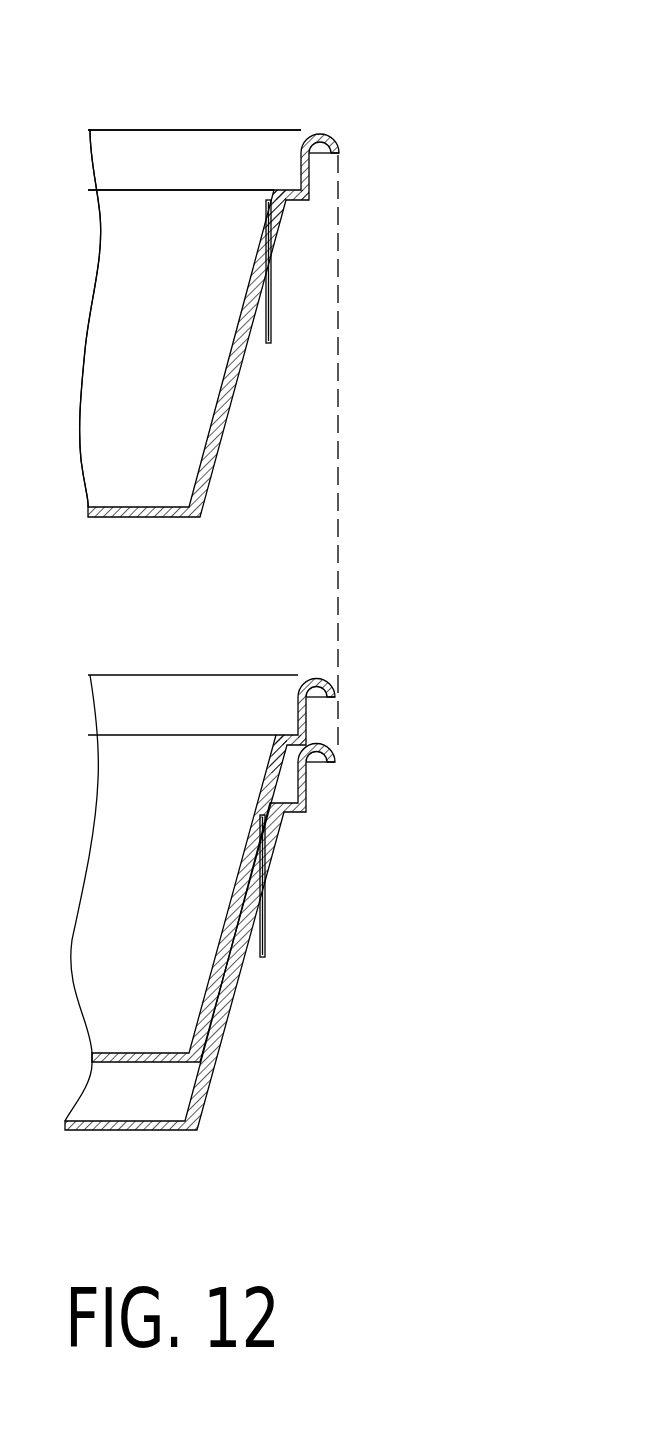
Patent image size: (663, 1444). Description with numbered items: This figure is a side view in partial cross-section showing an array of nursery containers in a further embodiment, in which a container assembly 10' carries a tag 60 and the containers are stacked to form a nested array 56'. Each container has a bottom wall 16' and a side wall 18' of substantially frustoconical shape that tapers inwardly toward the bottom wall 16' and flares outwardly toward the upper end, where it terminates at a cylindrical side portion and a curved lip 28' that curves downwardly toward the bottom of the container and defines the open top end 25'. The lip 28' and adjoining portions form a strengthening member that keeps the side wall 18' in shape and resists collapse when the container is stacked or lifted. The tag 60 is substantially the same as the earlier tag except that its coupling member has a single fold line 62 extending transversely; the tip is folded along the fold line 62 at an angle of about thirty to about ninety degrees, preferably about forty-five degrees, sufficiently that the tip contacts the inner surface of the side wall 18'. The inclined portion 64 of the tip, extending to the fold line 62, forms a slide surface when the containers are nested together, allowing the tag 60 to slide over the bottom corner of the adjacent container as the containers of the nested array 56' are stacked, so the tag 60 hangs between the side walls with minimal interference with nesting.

The container assembly 10' is at (434, 390).
The open top end 25' is at (190, 271).
The lip 28' is at (345, 103).
The nested array 56' is at (273, 901).
The inclined portion 64 is at (270, 192).
The fold line 62 is at (265, 207).
The tag 60 is at (289, 312).
The side wall 18' is at (199, 626).
The bottom wall 16' is at (144, 745).